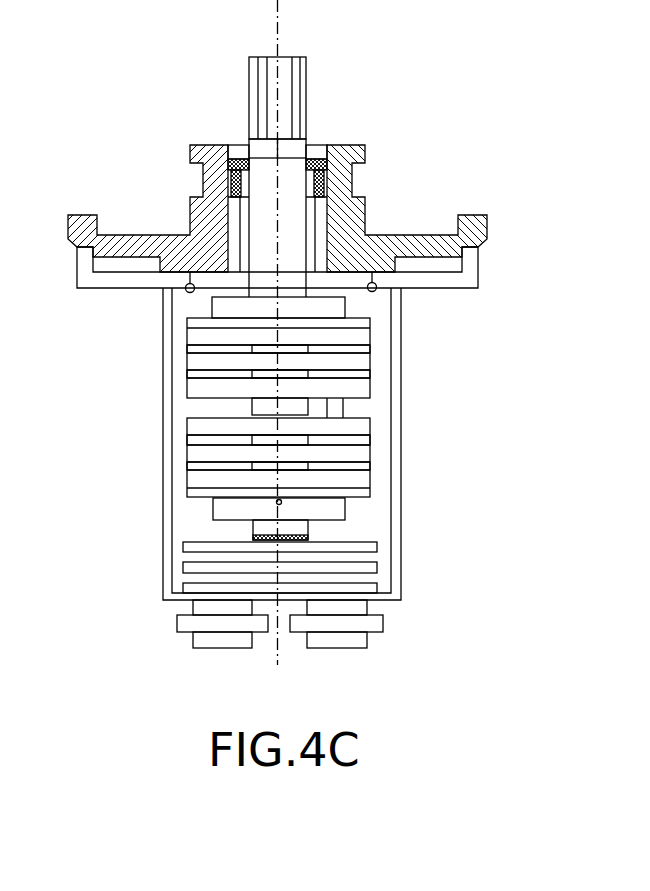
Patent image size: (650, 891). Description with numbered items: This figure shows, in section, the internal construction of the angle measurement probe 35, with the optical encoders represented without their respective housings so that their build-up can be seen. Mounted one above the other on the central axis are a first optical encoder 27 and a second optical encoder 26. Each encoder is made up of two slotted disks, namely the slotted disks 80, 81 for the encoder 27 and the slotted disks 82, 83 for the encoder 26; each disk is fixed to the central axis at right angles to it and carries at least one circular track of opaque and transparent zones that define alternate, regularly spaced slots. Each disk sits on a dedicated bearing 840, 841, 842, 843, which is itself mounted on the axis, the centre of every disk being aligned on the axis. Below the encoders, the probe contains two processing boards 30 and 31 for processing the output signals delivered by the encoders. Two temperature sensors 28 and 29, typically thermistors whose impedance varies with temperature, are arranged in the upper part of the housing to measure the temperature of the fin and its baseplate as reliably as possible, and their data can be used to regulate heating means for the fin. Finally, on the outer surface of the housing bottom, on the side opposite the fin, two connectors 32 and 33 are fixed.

The second optical encoder 26 is at (413, 418).
The first optical encoder 27 is at (413, 318).
The temperature sensor 28 is at (186, 291).
The temperature sensor 29 is at (372, 282).
The processing board 30 is at (372, 548).
The processing board 31 is at (200, 568).
The connector 32 is at (223, 638).
The connector 33 is at (335, 638).
The angle measurement probe 35 is at (474, 505).
The slotted disk 80 is at (195, 348).
The slotted disk 81 is at (195, 375).
The slotted disk 82 is at (197, 440).
The slotted disk 83 is at (193, 468).
The bearing 840 is at (293, 348).
The bearing 841 is at (292, 376).
The bearing 842 is at (293, 443).
The bearing 843 is at (262, 468).